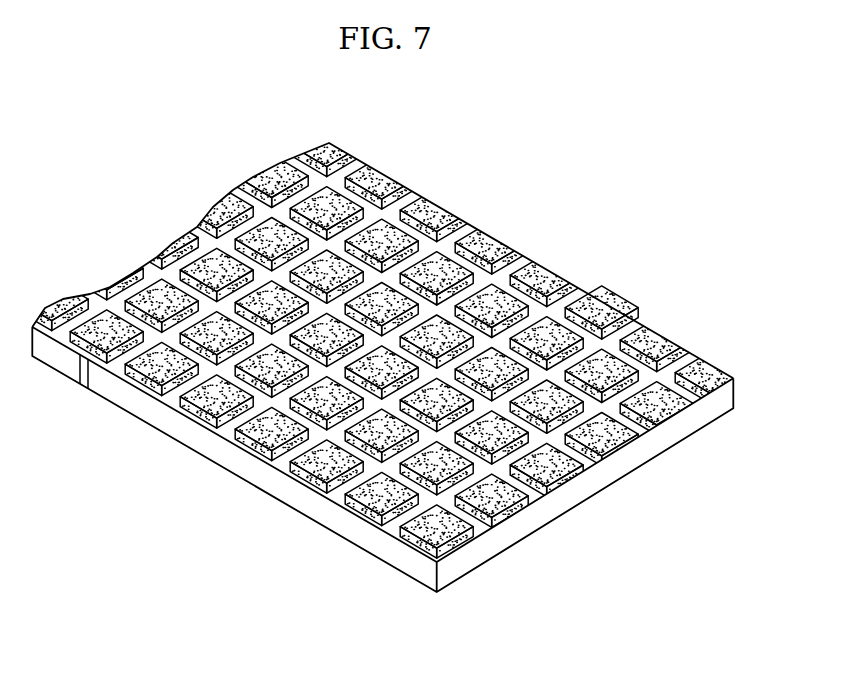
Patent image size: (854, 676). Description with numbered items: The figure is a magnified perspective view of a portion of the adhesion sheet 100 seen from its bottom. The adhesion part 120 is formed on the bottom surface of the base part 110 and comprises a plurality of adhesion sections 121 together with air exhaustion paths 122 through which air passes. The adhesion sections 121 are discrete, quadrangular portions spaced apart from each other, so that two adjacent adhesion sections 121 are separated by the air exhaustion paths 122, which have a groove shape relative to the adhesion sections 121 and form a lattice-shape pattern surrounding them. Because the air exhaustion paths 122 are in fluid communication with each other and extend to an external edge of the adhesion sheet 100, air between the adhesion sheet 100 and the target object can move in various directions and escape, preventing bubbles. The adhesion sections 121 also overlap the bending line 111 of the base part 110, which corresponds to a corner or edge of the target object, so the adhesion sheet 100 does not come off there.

The adhesion sheet 100 is at (632, 104).
The base part 110 is at (591, 488).
The bending line 111 is at (83, 385).
The adhesion part 120 is at (628, 268).
The adhesion section 121 is at (607, 295).
The air exhaustion path 122 is at (613, 336).